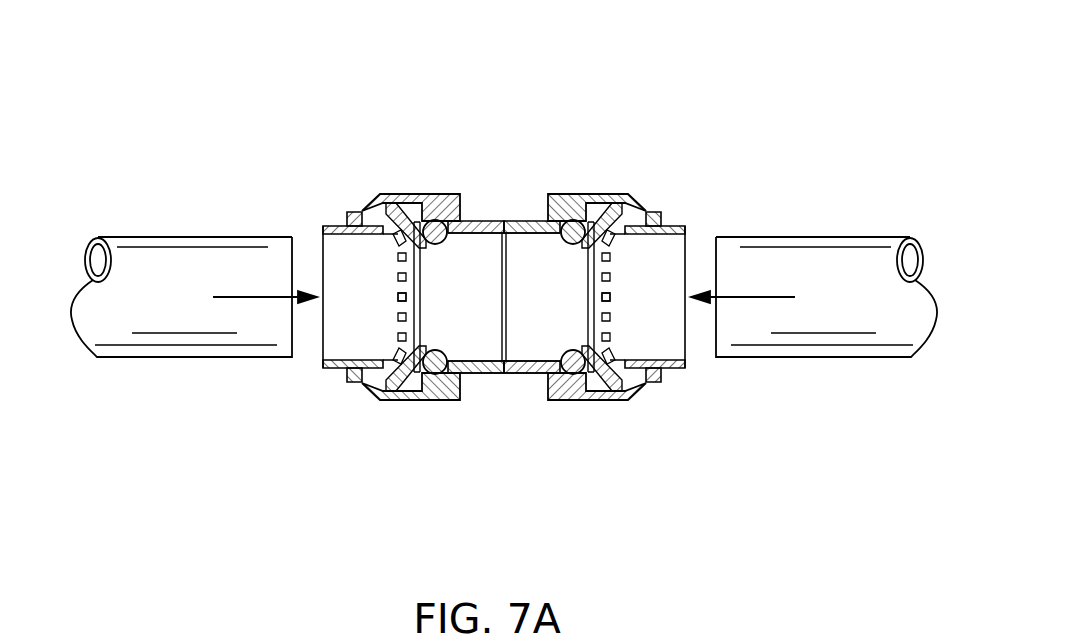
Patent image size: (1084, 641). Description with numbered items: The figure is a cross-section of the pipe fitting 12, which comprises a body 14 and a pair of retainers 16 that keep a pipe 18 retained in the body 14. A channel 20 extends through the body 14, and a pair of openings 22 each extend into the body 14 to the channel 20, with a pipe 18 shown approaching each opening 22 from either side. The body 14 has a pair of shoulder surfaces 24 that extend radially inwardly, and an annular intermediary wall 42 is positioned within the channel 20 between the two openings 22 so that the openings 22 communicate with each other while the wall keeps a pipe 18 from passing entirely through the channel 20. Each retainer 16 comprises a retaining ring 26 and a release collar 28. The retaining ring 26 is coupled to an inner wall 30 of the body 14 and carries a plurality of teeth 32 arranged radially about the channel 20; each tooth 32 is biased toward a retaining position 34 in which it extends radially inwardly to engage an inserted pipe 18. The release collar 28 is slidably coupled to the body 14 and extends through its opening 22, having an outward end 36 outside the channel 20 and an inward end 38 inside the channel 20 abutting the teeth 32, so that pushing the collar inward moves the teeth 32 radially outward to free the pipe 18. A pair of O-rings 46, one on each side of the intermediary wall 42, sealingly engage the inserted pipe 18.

The pipe fitting 12 is at (357, 139).
The body 14 is at (518, 222).
The retainer 16 is at (361, 422).
The pipe 18 is at (148, 260).
The channel 20 is at (556, 210).
The opening 22 is at (398, 290).
The shoulder surface 24 is at (440, 278).
The retaining ring 26 is at (397, 155).
The release collar 28 is at (673, 208).
The inner wall 30 is at (487, 372).
The tooth 32 is at (398, 270).
The retaining position 34 is at (645, 158).
The outward end 36 is at (387, 210).
The inward end 38 is at (396, 243).
The intermediary wall 42 is at (538, 265).
The O-ring 46 is at (490, 220).